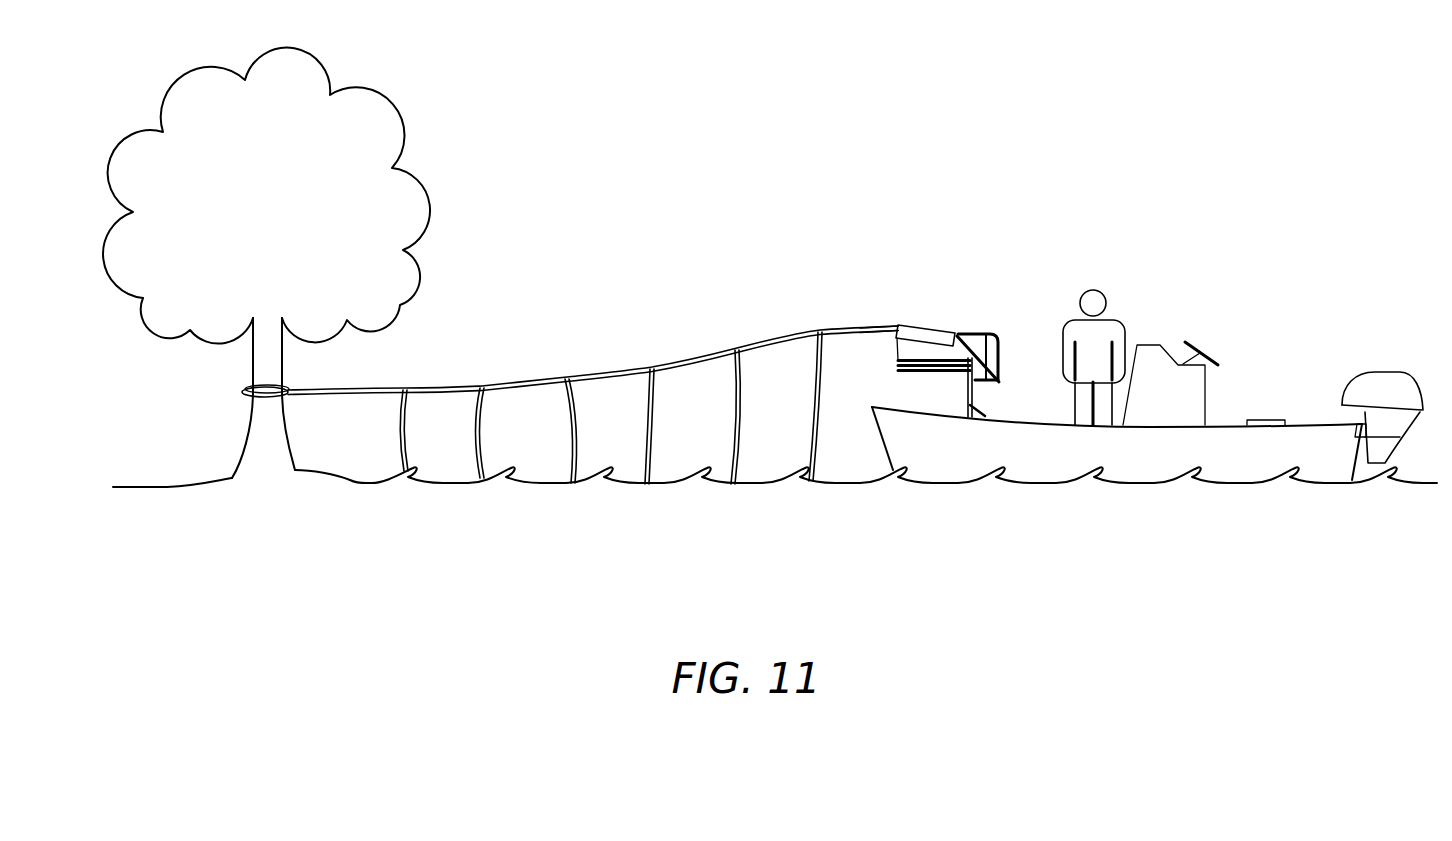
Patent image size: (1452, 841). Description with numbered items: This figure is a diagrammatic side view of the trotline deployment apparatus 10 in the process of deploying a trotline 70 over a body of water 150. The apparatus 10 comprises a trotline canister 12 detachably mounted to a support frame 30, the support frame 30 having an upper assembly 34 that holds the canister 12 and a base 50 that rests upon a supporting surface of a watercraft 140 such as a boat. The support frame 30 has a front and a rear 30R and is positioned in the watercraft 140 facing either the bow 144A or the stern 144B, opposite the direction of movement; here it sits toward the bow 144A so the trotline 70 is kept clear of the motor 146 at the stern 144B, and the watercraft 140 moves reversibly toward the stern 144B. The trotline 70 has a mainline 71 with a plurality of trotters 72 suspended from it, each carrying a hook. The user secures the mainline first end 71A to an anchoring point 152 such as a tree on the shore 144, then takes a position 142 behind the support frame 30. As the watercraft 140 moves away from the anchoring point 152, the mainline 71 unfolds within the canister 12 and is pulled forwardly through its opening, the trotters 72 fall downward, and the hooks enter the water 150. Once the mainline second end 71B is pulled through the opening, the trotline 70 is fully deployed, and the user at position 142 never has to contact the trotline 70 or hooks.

The trotline deployment apparatus 10 is at (978, 338).
The trotline canister 12 is at (922, 325).
The support frame 30 is at (1008, 329).
The rear 30R is at (1003, 382).
The upper assembly 34 is at (988, 328).
The base 50 is at (987, 413).
The trotline 70 is at (529, 368).
The mainline 71 is at (707, 353).
The mainline first end 71A is at (247, 397).
The mainline second end 71B is at (890, 323).
The trotters 72 is at (400, 433).
The watercraft 140 is at (1109, 406).
The position 142 is at (1102, 291).
The shoreline 144 is at (165, 488).
The bow 144A is at (880, 445).
The stern 144B is at (1363, 477).
The motor 146 is at (1410, 375).
The water 150 is at (765, 484).
The anchoring point 152 is at (252, 368).